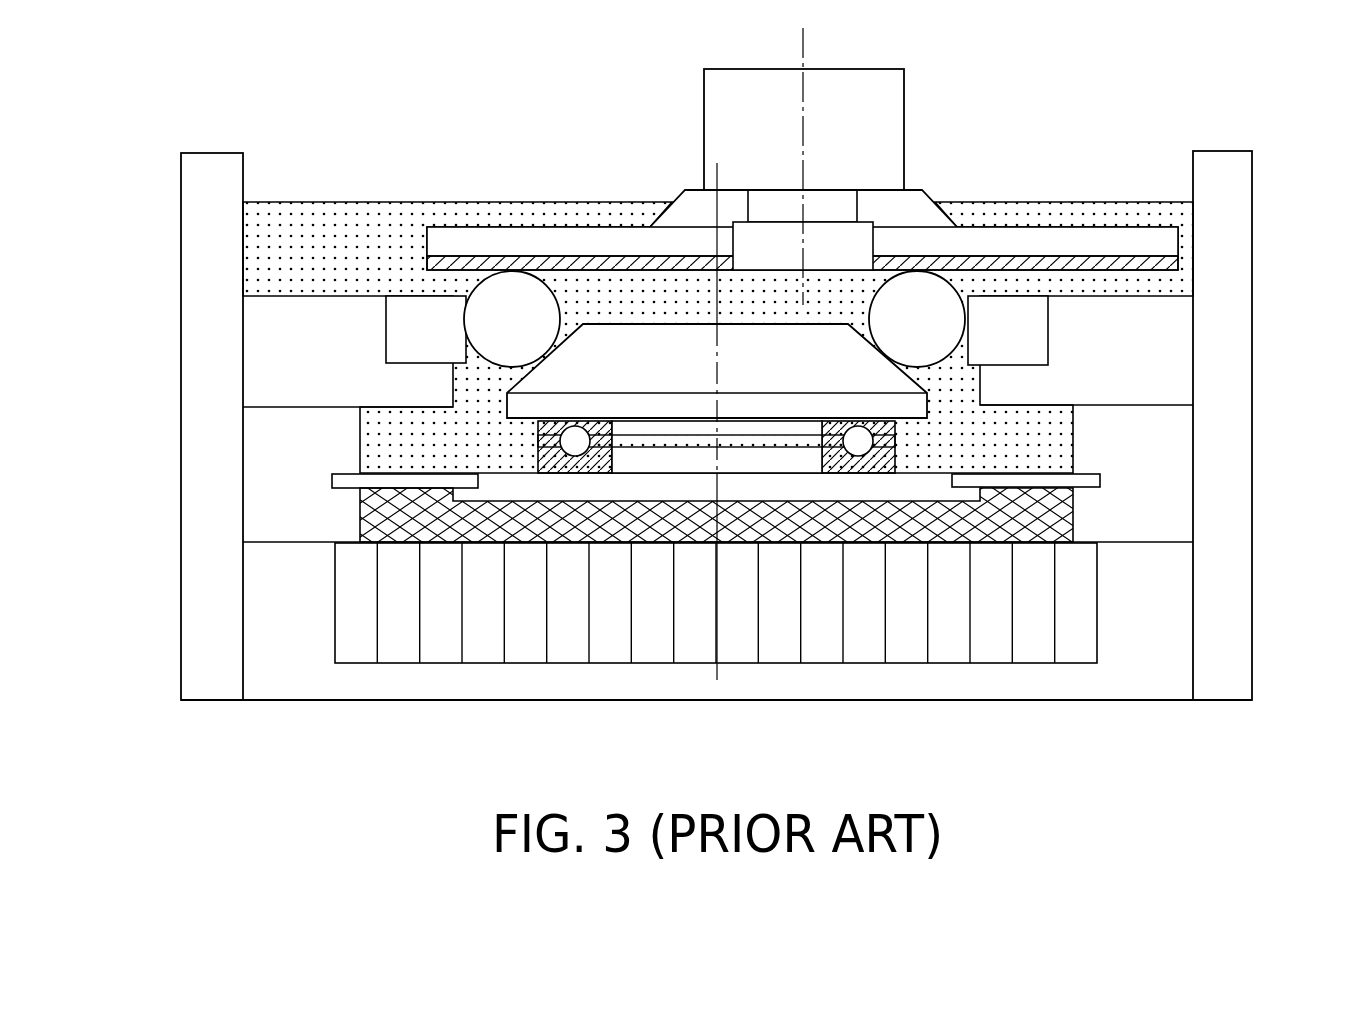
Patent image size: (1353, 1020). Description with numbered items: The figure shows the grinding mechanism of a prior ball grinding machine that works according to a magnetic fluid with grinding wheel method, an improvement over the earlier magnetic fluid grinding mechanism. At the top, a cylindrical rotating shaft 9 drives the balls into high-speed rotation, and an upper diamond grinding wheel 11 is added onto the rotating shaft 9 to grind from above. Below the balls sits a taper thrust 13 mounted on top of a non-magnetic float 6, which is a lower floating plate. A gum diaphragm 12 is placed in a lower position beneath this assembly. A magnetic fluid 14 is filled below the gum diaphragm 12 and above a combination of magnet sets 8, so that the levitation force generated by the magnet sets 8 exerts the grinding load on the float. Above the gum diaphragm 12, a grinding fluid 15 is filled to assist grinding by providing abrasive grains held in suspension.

The non-magnetic float 6 is at (285, 541).
The magnet sets 8 is at (608, 622).
The rotating shaft 9 is at (730, 126).
The upper diamond grinding wheel 11 is at (878, 232).
The gum diaphragm 12 is at (608, 438).
The taper thrust 13 is at (513, 347).
The magnetic fluid 14 is at (853, 559).
The grinding fluid 15 is at (797, 372).